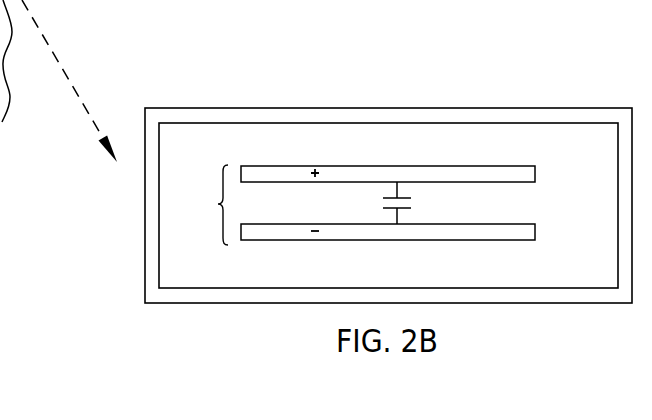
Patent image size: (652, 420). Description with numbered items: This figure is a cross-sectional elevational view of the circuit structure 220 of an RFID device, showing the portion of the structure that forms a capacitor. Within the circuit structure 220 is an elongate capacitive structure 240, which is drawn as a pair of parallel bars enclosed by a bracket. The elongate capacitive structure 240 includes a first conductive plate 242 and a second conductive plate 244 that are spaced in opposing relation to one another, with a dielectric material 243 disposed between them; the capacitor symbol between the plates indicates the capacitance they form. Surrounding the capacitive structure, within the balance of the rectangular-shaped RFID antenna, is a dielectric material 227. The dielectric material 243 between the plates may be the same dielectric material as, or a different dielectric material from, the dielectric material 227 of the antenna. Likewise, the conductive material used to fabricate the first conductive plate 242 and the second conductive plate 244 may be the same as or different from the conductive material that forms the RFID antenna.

The circuit structure 220 is at (253, 101).
The dielectric material 227 is at (604, 274).
The elongate capacitive structure 240 is at (306, 205).
The first conductive plate 242 is at (446, 166).
The dielectric material 243 is at (334, 215).
The second conductive plate 244 is at (446, 240).